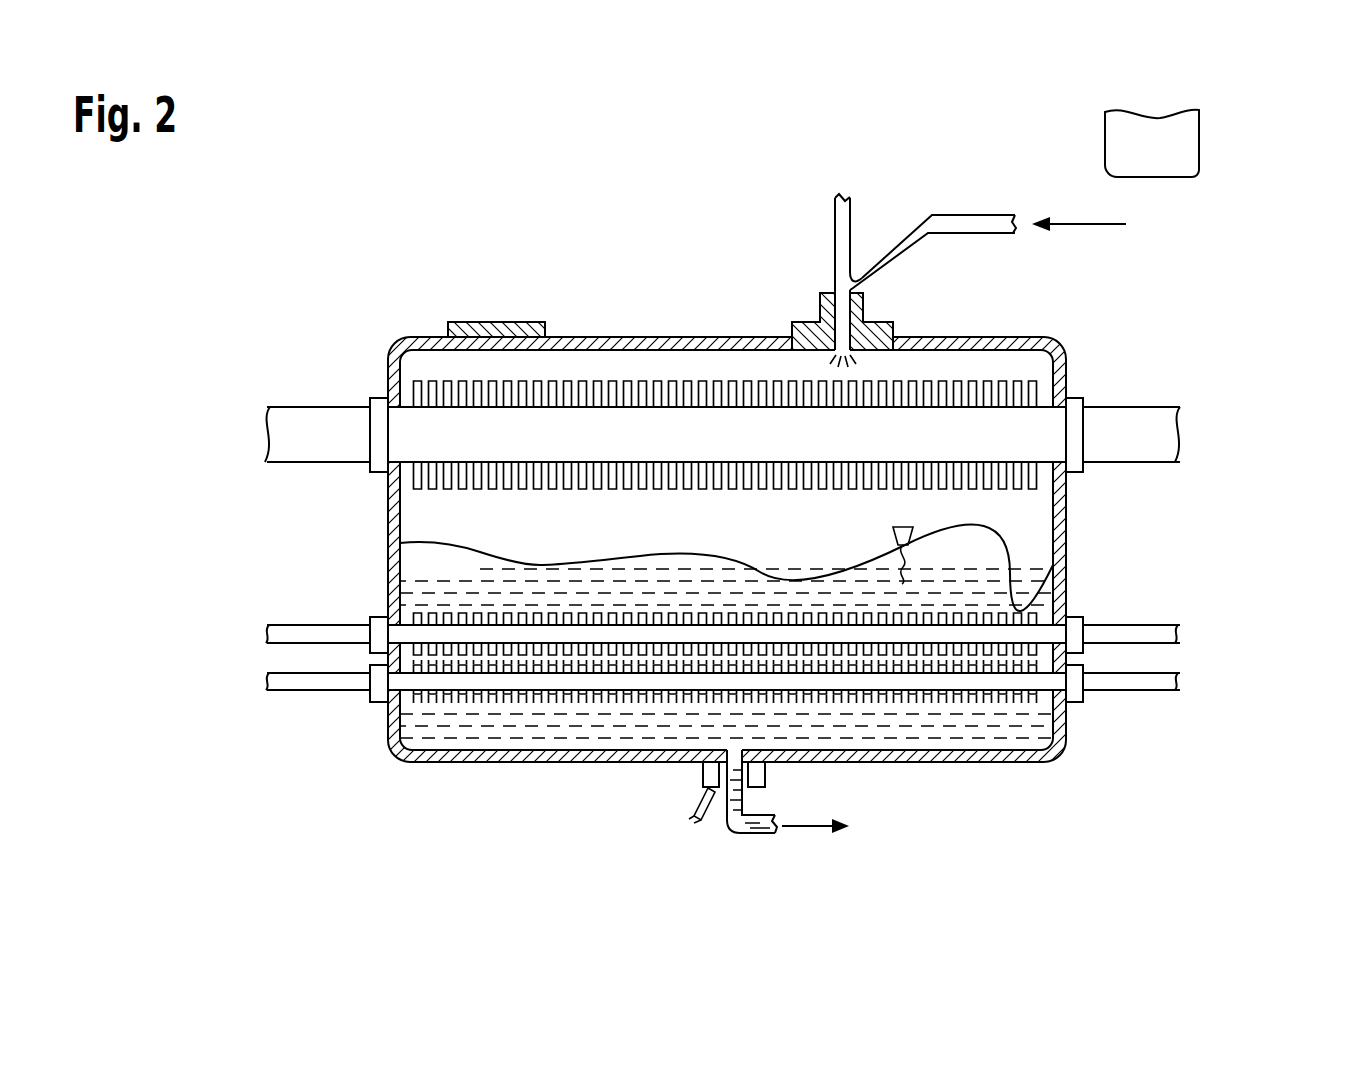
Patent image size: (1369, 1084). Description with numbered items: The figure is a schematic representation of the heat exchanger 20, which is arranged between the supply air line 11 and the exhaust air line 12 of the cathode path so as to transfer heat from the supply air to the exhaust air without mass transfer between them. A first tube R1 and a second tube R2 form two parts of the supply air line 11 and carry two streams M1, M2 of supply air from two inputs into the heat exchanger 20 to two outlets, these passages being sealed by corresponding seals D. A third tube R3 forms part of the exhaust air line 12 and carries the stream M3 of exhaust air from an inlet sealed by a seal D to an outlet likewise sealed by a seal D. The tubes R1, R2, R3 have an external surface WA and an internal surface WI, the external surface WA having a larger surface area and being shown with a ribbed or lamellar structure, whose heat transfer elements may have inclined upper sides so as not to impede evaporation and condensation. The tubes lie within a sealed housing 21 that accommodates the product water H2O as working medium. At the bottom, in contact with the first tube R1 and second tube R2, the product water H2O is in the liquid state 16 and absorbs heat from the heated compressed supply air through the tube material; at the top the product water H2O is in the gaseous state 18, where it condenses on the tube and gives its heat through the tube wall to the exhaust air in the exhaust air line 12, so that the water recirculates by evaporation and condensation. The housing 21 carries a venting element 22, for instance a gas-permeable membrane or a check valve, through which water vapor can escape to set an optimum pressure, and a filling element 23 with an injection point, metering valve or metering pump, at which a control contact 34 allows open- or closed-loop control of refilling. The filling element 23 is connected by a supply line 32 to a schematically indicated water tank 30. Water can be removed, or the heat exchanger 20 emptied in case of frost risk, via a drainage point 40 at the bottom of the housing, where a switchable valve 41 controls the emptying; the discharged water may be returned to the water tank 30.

The heat exchanger 20 is at (345, 192).
The sealed housing 21 is at (410, 764).
The venting element 22 is at (503, 321).
The filling element 23 is at (800, 334).
The control contact 34 is at (834, 218).
The supply line 32 is at (1090, 227).
The water tank 30 is at (1118, 142).
The exhaust air line 12 is at (302, 406).
The supply air line 11 is at (300, 624).
The seal D is at (383, 400).
The liquid state 16 is at (447, 583).
The gaseous state 18 is at (608, 540).
The first tube R1 is at (597, 708).
The second tube R2 is at (518, 650).
The third tube R3 is at (657, 380).
The external surface WA is at (935, 402).
The internal surface WI is at (993, 462).
The product water H2O is at (1035, 732).
The drainage point 40 is at (805, 830).
The switchable valve 41 is at (705, 779).
The stream of the supply air M1 is at (222, 682).
The stream of the supply air M2 is at (222, 634).
The stream of the exhaust air M3 is at (240, 430).